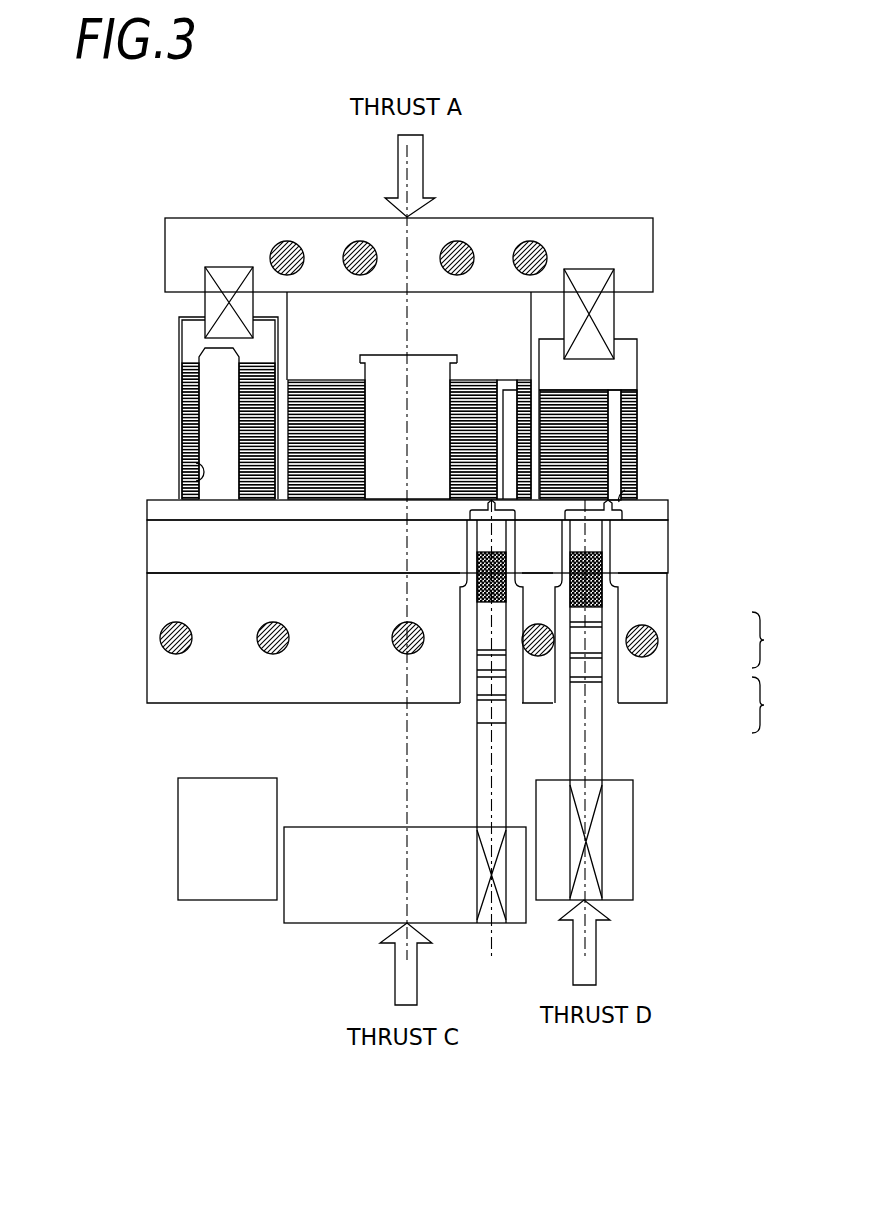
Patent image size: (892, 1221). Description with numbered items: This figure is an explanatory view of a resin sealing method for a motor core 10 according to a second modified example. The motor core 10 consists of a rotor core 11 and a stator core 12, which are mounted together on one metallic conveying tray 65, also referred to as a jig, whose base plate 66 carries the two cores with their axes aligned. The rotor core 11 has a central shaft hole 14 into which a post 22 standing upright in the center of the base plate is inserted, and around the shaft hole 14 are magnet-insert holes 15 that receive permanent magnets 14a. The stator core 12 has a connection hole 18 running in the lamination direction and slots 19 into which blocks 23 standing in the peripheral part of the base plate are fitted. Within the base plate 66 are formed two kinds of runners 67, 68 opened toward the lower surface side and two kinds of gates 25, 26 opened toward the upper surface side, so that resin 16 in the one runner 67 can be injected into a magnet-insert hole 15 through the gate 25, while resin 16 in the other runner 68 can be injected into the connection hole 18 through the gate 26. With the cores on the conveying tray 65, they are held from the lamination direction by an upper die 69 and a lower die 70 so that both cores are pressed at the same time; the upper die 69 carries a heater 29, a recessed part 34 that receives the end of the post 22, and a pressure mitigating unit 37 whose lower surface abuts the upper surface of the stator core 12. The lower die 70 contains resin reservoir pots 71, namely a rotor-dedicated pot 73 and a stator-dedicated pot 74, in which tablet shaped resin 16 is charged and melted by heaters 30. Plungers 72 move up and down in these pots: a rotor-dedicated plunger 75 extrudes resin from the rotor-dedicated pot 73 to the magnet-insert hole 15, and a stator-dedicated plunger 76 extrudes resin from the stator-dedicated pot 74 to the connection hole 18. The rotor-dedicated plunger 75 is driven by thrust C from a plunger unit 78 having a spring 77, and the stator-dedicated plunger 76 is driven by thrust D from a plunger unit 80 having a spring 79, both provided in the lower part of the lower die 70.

The motor core 10 is at (138, 362).
The rotor core 11 is at (329, 378).
The stator core 12 is at (177, 395).
The shaft hole 14 is at (447, 410).
The permanent magnets 14a is at (510, 445).
The magnet-insert holes 15 is at (500, 420).
The resin 16 is at (598, 568).
The connection hole 18 is at (635, 450).
The slots 19 is at (196, 481).
The post 22 is at (433, 400).
The blocks 23 is at (213, 433).
The gate 25 is at (613, 457).
The gate 26 is at (625, 490).
The heater 29 is at (361, 242).
The heaters 30 is at (267, 657).
The recessed part 34 is at (388, 358).
The pressure mitigating unit 37 is at (167, 316).
The conveying tray 65 is at (146, 507).
The base plate 66 is at (188, 510).
The runner 67 is at (518, 523).
The runner 68 is at (623, 517).
The upper die 69 is at (656, 216).
The lower die 70 is at (146, 597).
The resin reservoir pots 71 is at (779, 640).
The plungers 72 is at (779, 705).
The rotor-dedicated pot 73 is at (623, 587).
The stator-dedicated pot 74 is at (530, 585).
The rotor-dedicated plunger 75 is at (512, 689).
The stator-dedicated plunger 76 is at (607, 671).
The spring 77 is at (498, 918).
The plunger unit 78 is at (475, 927).
The spring 79 is at (590, 865).
The plunger unit 80 is at (636, 894).